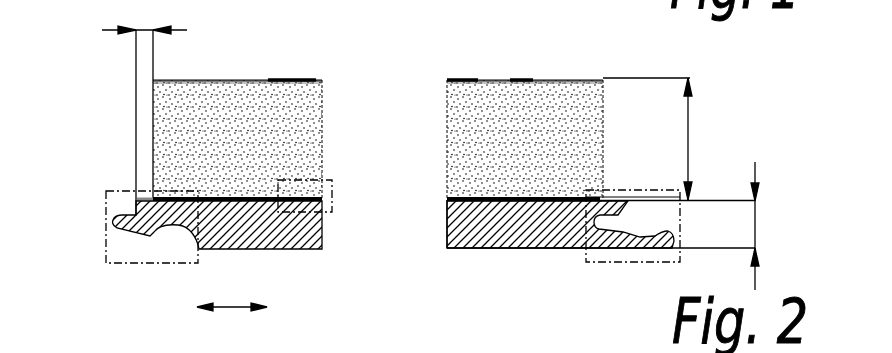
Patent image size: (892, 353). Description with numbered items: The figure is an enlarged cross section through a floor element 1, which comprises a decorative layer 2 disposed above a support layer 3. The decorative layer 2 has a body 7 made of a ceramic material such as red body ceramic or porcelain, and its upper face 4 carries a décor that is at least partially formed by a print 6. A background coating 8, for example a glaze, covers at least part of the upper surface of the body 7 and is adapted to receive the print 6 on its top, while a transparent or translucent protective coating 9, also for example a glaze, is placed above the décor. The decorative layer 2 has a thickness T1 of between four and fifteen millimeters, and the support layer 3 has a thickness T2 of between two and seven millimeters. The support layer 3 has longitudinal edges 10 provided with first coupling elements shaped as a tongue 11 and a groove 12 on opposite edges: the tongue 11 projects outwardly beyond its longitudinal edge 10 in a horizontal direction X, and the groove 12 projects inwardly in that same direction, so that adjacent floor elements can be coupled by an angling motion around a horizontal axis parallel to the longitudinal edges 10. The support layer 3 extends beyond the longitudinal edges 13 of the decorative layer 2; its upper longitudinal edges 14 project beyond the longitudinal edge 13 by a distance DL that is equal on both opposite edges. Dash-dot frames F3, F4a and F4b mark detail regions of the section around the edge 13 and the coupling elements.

The floor element 1 is at (215, 58).
The decorative layer 2 is at (155, 135).
The support layer 3 is at (525, 248).
The upper face 4 is at (314, 80).
The print 6 is at (275, 80).
The body 7 is at (162, 168).
The background coating 8 is at (447, 83).
The protective coating 9 is at (448, 80).
The longitudinal edges 10 is at (112, 245).
The tongue 11 is at (154, 232).
The groove 12 is at (647, 217).
The longitudinal edges of the decorative layer 13 is at (155, 120).
The upper longitudinal edges 14 is at (107, 202).
The distance DL is at (144, 30).
The thickness of the decorative layer T1 is at (690, 133).
The thickness of the support layer T2 is at (757, 220).
The horizontal direction X is at (235, 307).
The detail region F3 is at (332, 193).
The detail region F4a is at (115, 263).
The detail region F4b is at (587, 262).